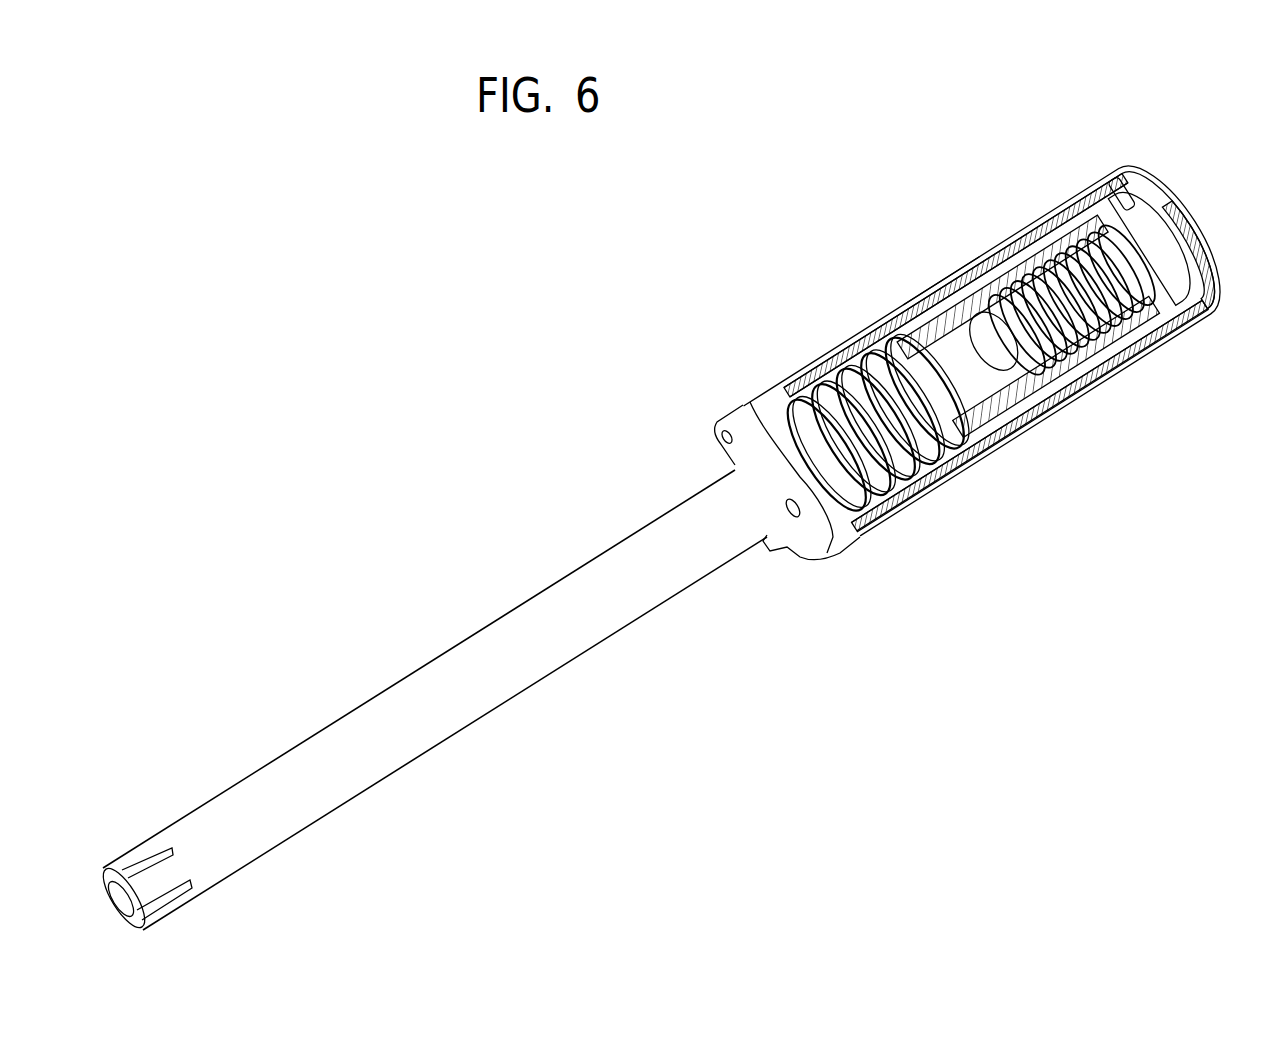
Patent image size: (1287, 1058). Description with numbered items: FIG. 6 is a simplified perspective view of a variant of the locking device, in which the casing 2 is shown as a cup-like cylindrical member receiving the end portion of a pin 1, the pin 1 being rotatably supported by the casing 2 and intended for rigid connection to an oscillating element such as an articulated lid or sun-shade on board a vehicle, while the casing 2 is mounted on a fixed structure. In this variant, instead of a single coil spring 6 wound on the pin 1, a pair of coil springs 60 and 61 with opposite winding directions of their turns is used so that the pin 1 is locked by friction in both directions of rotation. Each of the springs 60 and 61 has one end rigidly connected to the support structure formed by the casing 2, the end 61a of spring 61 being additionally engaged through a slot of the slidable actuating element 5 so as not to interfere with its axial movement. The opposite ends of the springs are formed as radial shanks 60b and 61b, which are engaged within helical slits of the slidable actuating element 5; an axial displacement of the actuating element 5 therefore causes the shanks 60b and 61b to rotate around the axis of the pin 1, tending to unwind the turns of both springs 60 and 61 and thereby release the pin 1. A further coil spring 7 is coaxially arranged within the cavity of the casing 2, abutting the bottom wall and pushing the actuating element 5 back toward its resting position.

The pin 1 is at (333, 672).
The casing 2 is at (797, 310).
The slidable actuating element 5 is at (1200, 294).
The coil spring 6 is at (895, 512).
The coil spring 7 is at (937, 495).
The coil spring 60 is at (992, 458).
The radial shank 60b is at (934, 280).
The coil spring 61 is at (1020, 428).
The end of coil spring 61a is at (1130, 172).
The radial shank 61b is at (964, 262).